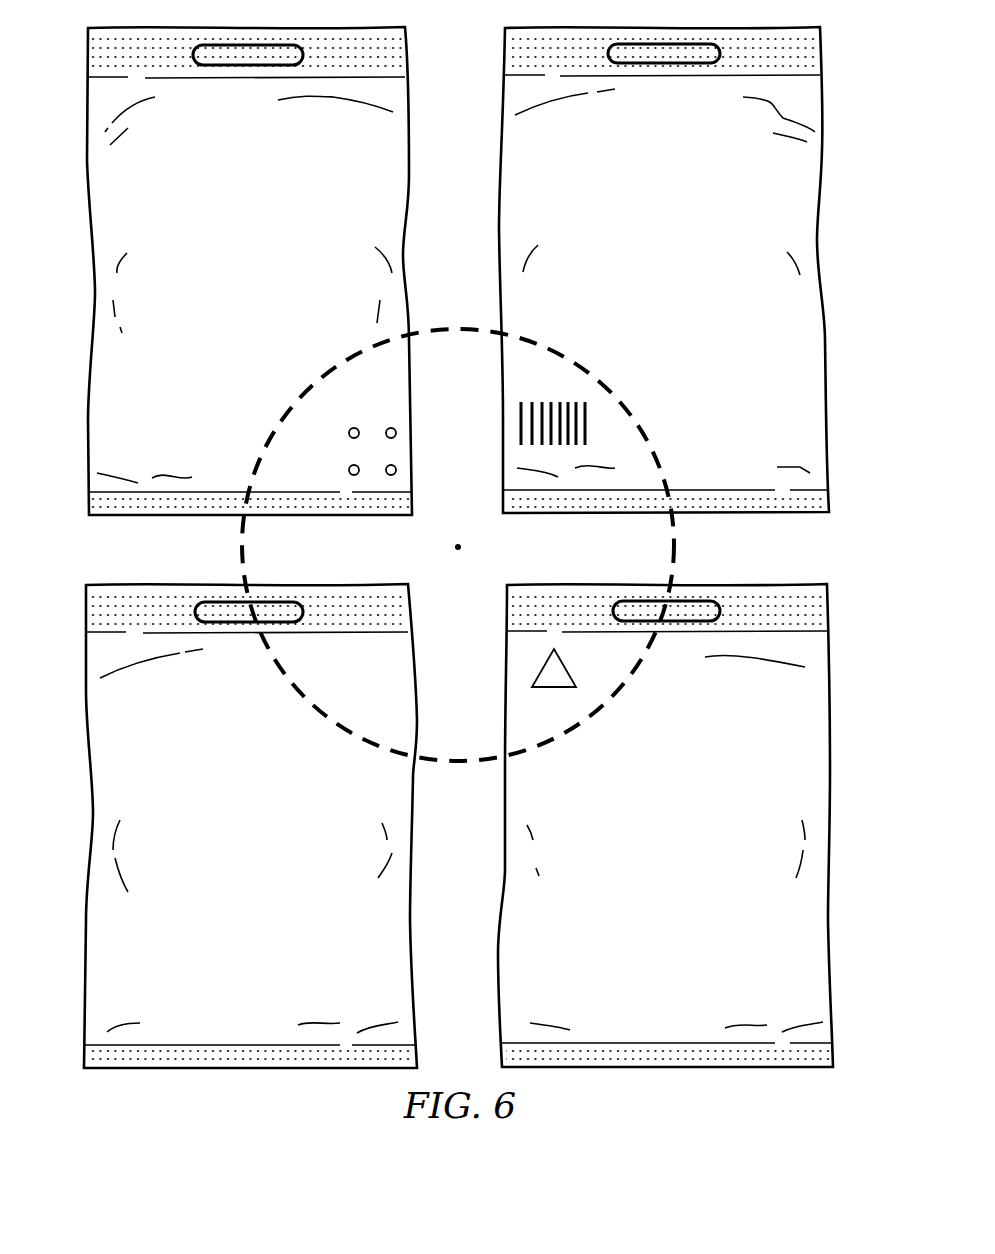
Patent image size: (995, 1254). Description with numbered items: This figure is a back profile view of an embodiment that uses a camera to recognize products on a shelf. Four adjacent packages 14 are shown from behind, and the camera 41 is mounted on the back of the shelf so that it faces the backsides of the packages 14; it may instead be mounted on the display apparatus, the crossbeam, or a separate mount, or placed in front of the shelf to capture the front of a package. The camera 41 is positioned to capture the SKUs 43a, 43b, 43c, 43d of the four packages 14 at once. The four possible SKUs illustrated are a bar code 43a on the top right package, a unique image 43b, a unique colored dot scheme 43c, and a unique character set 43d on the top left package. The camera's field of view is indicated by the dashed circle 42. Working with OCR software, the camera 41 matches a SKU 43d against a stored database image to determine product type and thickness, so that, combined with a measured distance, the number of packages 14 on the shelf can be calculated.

The package 14 is at (87, 163).
The camera 41 is at (458, 541).
The circular region 42 is at (353, 360).
The SKU 43a is at (587, 418).
The unique image 43b is at (567, 665).
The unique colored dot scheme 43c is at (335, 680).
The unique character set 43d is at (391, 427).